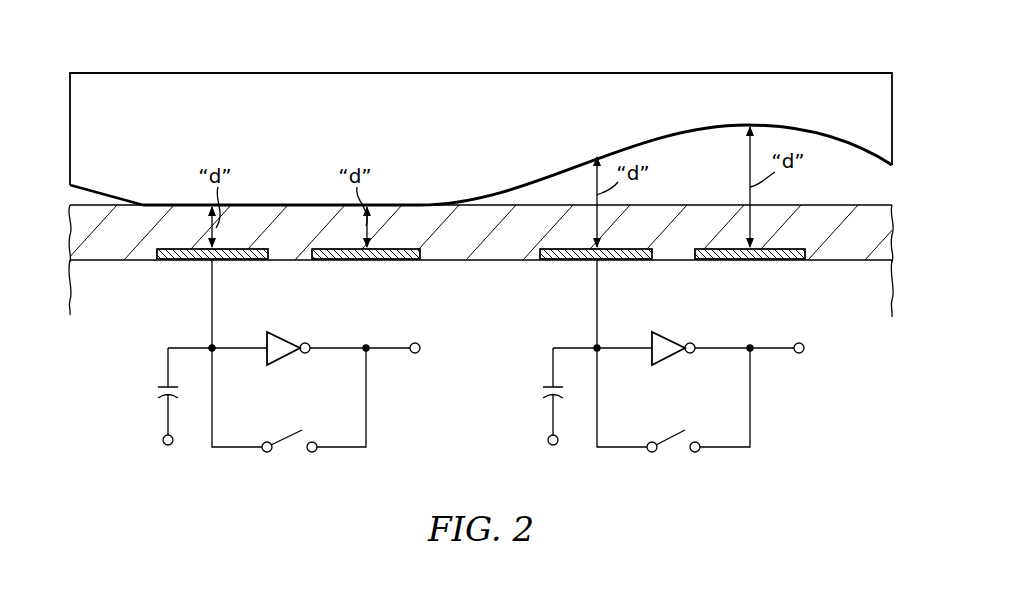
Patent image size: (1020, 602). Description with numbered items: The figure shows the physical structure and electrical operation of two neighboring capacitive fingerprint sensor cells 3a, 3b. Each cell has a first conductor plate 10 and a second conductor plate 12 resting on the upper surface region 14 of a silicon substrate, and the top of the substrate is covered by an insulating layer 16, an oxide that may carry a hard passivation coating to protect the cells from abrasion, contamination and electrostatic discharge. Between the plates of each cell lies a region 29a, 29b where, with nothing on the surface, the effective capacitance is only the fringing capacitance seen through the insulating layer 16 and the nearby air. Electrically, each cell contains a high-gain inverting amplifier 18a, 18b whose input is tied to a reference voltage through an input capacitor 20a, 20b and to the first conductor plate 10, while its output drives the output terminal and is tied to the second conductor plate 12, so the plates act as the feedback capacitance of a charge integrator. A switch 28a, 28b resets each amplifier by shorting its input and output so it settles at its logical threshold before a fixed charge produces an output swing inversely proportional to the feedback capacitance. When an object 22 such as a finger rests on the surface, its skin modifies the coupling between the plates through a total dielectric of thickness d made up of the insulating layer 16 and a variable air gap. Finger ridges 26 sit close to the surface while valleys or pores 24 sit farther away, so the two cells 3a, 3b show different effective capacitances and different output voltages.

The object 22 is at (442, 73).
The fingerprint valleys or pores 24 is at (683, 128).
The finger ridges 26 is at (278, 205).
The insulating layer 16 is at (823, 213).
The upper surface region 14 is at (127, 261).
The first conductor plate 10 is at (182, 260).
The second conductor plate 12 is at (393, 260).
The region 29a is at (292, 262).
The region 29b is at (678, 262).
The cell 3a is at (265, 387).
The cell 3b is at (673, 387).
The high-gain inverting amplifier 18a is at (288, 363).
The high-gain inverting amplifier 18b is at (672, 363).
The input capacitor 20a is at (157, 394).
The input capacitor 20b is at (545, 394).
The switch 28a is at (296, 454).
The switch 28b is at (678, 454).